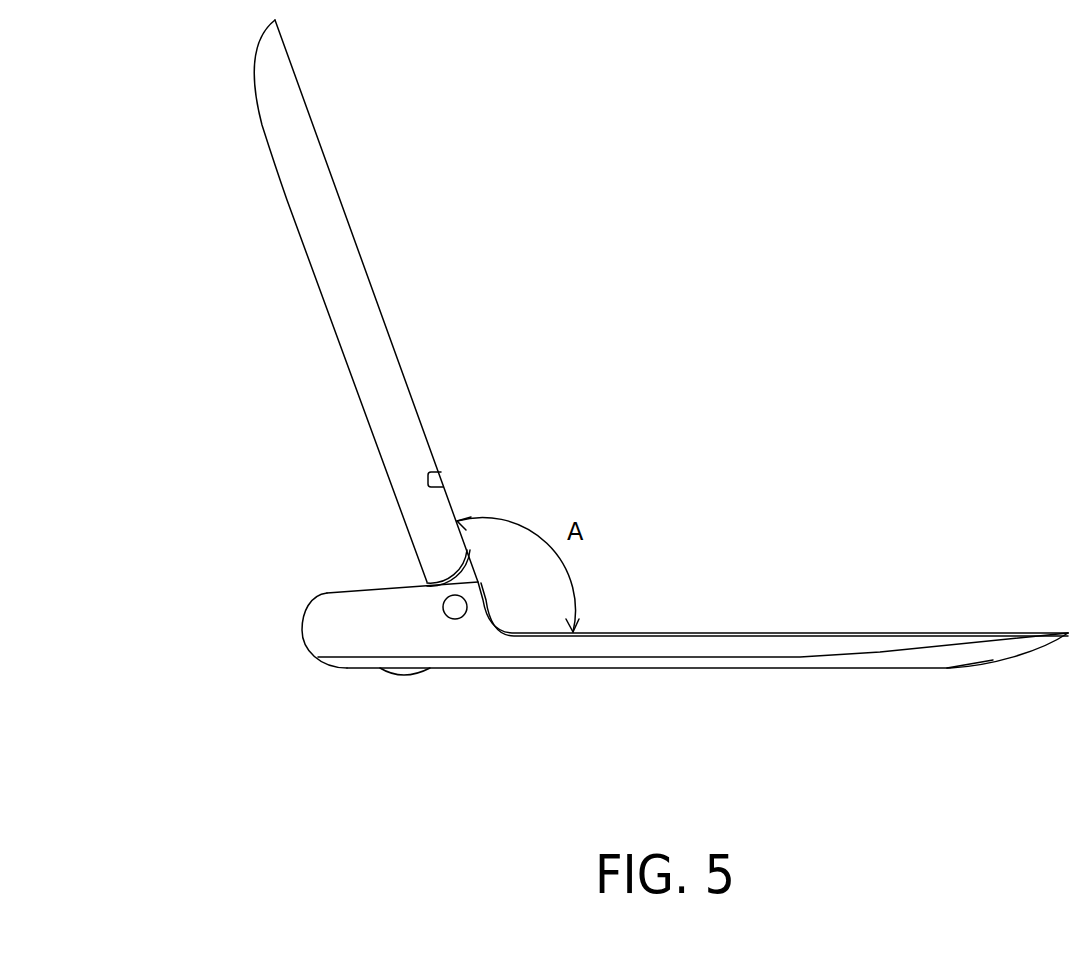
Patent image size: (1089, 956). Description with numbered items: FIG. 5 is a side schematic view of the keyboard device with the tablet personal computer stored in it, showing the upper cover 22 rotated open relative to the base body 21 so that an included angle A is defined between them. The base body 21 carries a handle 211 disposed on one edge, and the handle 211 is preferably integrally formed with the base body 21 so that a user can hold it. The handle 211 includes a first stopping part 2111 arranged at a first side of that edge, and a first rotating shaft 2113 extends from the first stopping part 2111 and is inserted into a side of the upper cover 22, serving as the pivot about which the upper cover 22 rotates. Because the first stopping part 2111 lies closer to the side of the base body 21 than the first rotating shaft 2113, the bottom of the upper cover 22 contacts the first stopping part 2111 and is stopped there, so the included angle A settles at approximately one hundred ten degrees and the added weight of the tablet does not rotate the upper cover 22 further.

The upper cover 22 is at (270, 78).
The base body 21 is at (725, 643).
The handle 211 is at (333, 630).
The first stopping part 2111 is at (374, 601).
The first rotating shaft 2113 is at (457, 610).